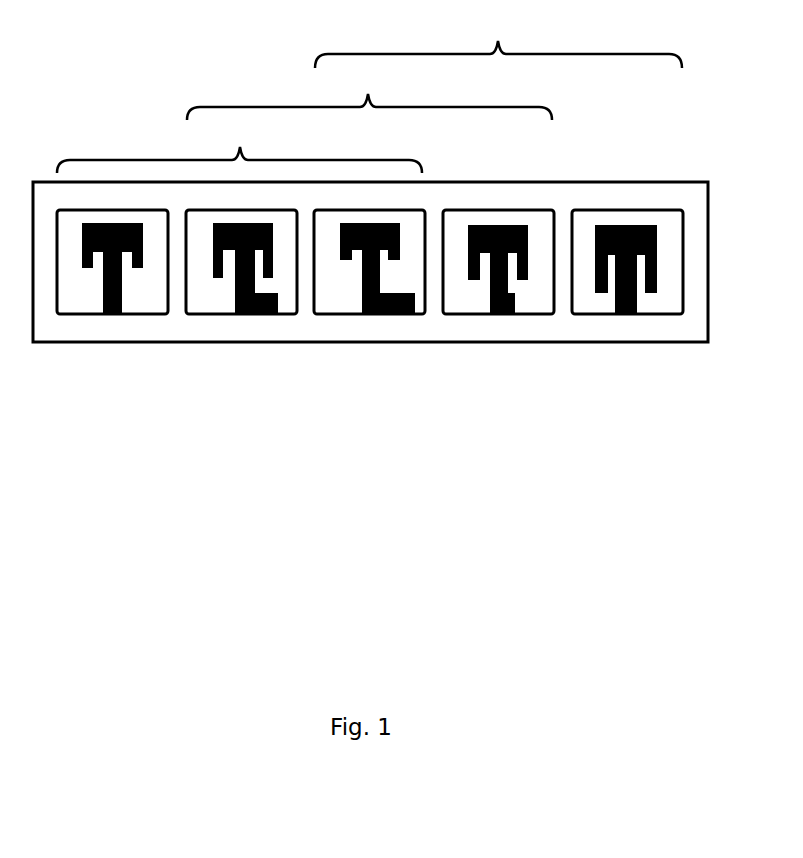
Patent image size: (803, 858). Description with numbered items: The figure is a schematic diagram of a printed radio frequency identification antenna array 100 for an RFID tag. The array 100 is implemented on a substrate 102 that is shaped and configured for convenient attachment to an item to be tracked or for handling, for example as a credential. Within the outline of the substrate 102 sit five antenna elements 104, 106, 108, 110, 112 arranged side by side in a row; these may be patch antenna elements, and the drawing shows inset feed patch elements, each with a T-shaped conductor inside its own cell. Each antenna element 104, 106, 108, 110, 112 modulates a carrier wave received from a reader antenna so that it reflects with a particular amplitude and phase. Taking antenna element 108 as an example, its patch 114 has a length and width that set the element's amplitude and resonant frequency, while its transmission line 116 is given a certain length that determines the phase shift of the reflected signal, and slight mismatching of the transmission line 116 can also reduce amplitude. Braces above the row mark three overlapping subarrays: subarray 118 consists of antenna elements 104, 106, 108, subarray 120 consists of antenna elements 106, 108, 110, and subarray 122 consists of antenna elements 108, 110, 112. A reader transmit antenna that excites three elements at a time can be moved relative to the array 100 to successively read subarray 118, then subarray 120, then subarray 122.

The printed RFID antenna array 100 is at (150, 508).
The substrate 102 is at (668, 342).
The antenna element 104 is at (93, 315).
The antenna element 106 is at (225, 315).
The antenna element 108 is at (359, 322).
The antenna element 110 is at (479, 315).
The antenna element 112 is at (607, 315).
The patch 114 is at (343, 260).
The transmission line 116 is at (383, 313).
The subarray 118 is at (239, 147).
The subarray 120 is at (369, 94).
The subarray 122 is at (498, 41).